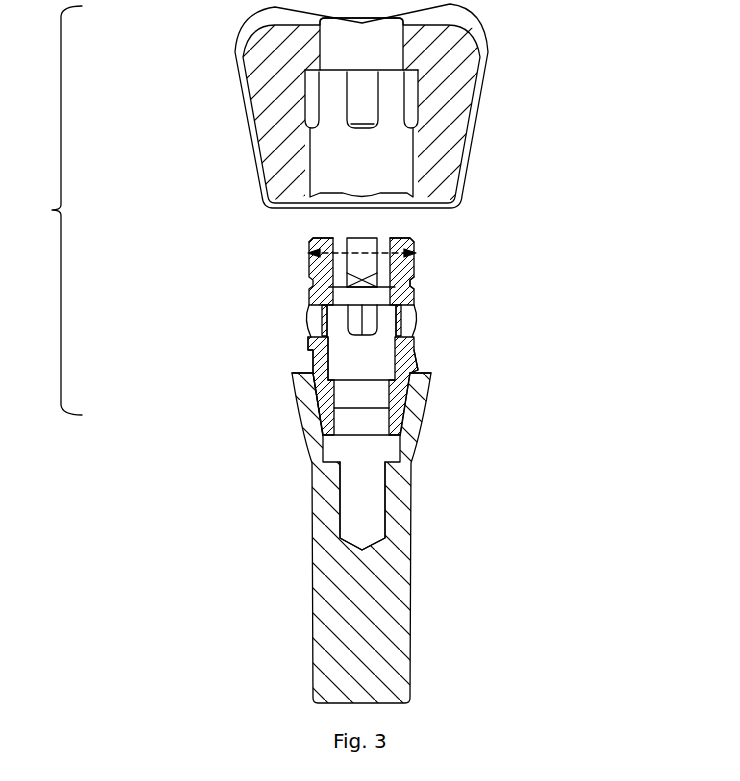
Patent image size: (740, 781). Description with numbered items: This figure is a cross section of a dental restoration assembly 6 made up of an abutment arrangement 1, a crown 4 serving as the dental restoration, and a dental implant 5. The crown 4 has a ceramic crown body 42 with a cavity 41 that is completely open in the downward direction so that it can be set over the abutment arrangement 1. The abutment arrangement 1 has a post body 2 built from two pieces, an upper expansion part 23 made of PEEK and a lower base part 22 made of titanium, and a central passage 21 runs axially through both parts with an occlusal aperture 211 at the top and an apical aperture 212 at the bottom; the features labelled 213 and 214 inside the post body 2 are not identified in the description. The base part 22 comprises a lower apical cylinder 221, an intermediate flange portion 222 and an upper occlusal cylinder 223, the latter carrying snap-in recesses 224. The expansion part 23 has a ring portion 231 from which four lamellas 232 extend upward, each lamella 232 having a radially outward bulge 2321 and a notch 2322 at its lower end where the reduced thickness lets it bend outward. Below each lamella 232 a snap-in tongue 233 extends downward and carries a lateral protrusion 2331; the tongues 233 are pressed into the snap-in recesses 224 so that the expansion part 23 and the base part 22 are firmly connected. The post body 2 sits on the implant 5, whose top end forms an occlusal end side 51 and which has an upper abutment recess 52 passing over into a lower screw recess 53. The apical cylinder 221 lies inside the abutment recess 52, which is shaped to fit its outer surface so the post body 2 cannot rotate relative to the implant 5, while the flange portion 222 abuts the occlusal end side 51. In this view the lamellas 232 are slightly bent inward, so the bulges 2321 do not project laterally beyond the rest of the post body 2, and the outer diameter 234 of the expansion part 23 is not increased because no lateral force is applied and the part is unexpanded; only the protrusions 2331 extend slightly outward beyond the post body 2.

The abutment arrangement 1 is at (272, 243).
The post body 2 is at (460, 302).
The crown 4 is at (228, 107).
The dental implant 5 is at (300, 613).
The dental restoration assembly 6 is at (52, 210).
The central passage 21 is at (407, 357).
The base part 22 is at (277, 373).
The expansion part 23 is at (298, 282).
The cavity 41 is at (376, 174).
The crown body 42 is at (458, 60).
The occlusal end side 51 is at (300, 382).
The abutment recess 52 is at (420, 407).
The screw recess 53 is at (378, 497).
The occlusal aperture 211 is at (383, 237).
The apical aperture 212 is at (377, 437).
The inner cavity step 213 is at (390, 355).
The inner cavity step 214 is at (388, 391).
The apical cylinder 221 is at (317, 418).
The flange portion 222 is at (430, 382).
The occlusal cylinder 223 is at (313, 360).
The snap-in recess 224 is at (322, 333).
The ring portion 231 is at (320, 293).
The lamella 232 is at (428, 258).
The snap-in tongue 233 is at (320, 317).
The outer diameter 234 is at (418, 257).
The bulge 2321 is at (311, 260).
The notch 2322 is at (415, 280).
The protrusion 2331 is at (420, 320).